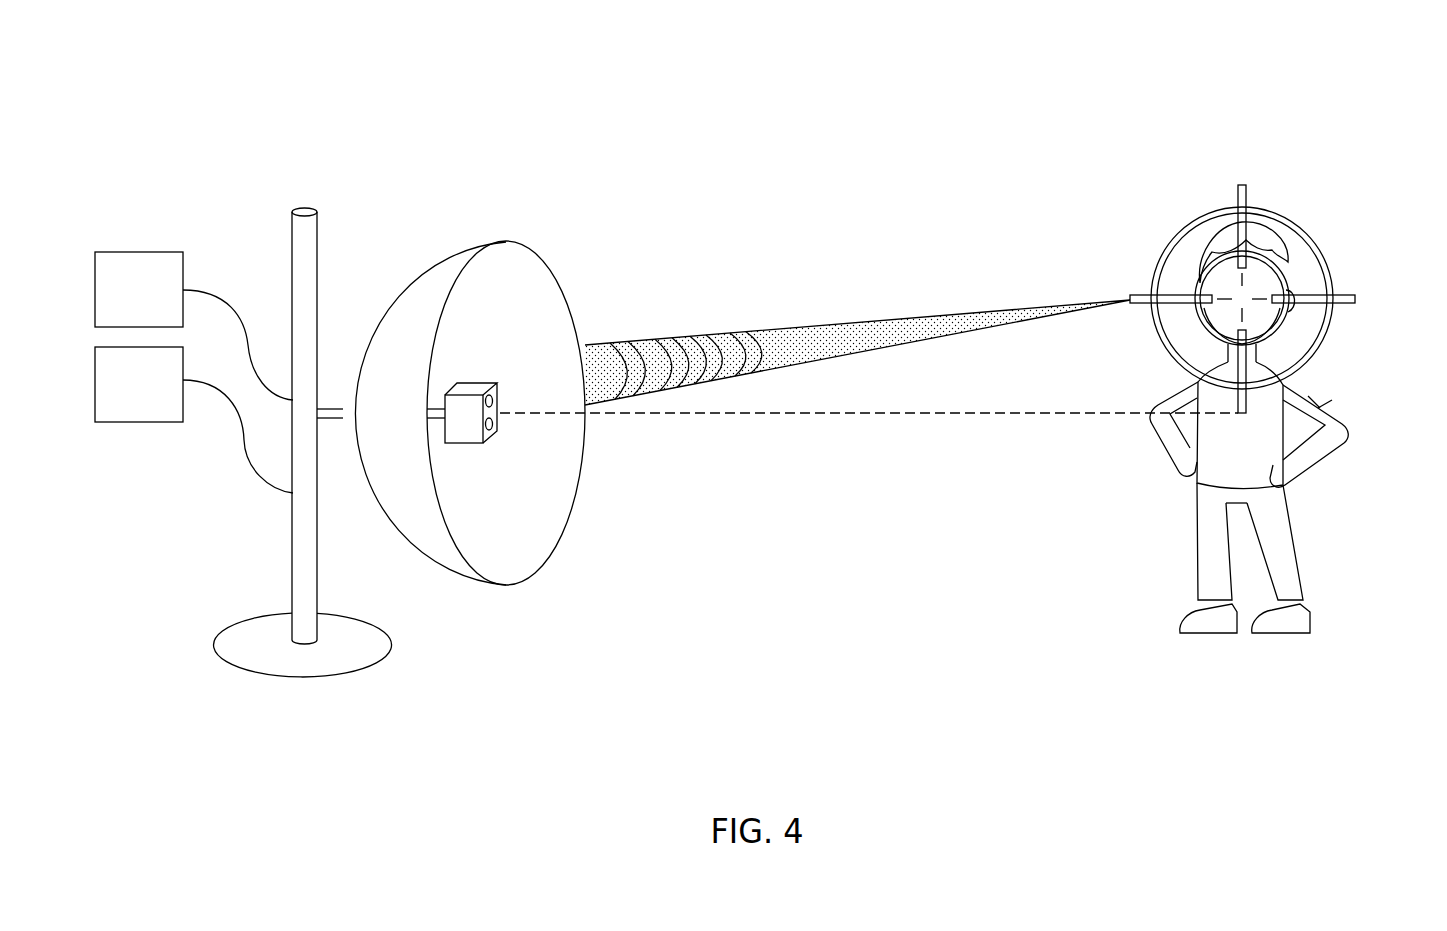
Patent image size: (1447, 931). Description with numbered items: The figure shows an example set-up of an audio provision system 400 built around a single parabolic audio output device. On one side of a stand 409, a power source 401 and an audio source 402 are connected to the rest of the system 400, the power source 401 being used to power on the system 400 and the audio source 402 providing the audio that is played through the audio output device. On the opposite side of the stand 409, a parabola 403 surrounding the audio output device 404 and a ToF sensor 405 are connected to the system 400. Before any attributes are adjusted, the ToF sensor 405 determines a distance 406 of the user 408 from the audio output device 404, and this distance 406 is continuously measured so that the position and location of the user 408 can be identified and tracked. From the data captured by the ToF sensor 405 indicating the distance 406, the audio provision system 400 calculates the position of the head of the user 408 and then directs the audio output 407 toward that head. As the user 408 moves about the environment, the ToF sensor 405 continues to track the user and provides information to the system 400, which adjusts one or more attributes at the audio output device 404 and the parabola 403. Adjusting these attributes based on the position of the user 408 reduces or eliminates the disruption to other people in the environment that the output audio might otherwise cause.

The audio provision system 400 is at (277, 94).
The power source 401 is at (138, 422).
The audio source 402 is at (138, 252).
The parabola 403 is at (397, 285).
The audio output device 404 is at (477, 352).
The ToF sensor 405 is at (485, 388).
The distance 406 is at (893, 420).
The audio output 407 is at (837, 322).
The user 408 is at (1367, 387).
The stand 409 is at (292, 577).